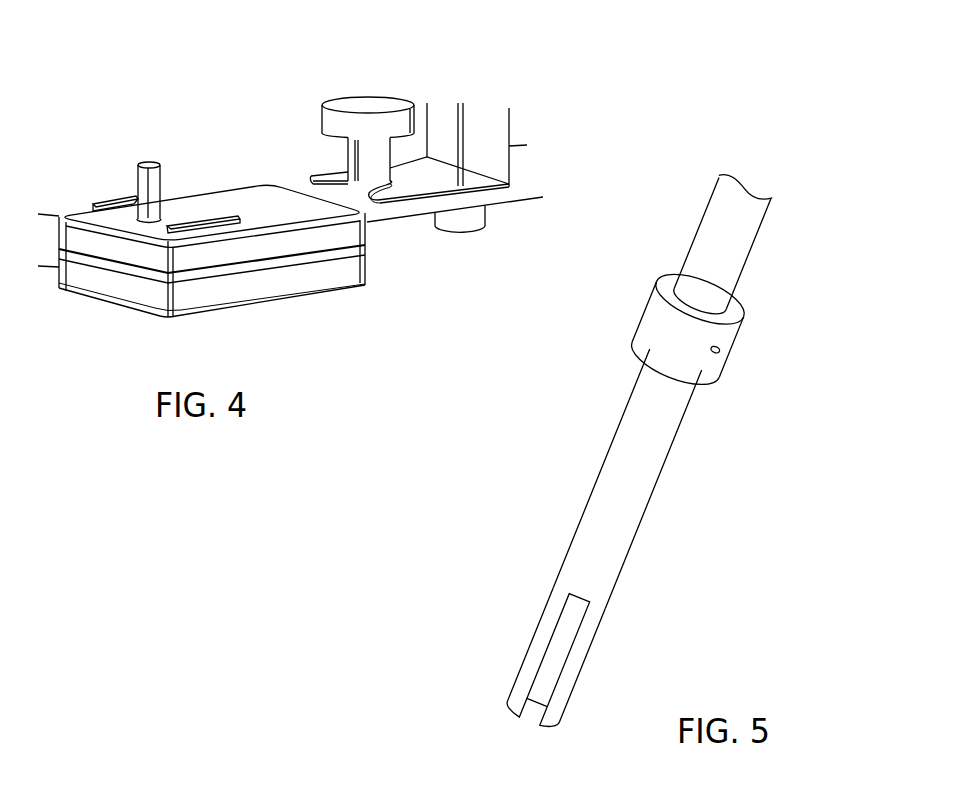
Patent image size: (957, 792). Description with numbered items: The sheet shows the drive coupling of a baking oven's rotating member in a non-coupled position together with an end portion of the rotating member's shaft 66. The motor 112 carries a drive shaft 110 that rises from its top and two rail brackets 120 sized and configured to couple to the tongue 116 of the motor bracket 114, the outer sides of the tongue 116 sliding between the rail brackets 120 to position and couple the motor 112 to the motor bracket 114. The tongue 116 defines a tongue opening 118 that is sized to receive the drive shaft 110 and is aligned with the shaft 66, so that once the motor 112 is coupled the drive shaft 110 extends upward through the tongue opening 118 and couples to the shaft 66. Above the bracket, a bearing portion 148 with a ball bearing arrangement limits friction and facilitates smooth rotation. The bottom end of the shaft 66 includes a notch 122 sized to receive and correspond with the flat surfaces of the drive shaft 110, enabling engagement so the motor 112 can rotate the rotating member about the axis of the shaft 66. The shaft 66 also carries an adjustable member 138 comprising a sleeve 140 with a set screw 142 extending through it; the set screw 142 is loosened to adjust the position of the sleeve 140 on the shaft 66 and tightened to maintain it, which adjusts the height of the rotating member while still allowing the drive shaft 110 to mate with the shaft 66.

In FIG. 4, the shaft 66 is at (407, 122).
In FIG. 5, the shaft 66 is at (645, 497).
In FIG. 4, the drive shaft 110 is at (156, 178).
In FIG. 4, the motor 112 is at (278, 284).
In FIG. 4, the motor bracket 114 is at (485, 165).
In FIG. 4, the tongue 116 is at (415, 195).
In FIG. 4, the tongue opening 118 is at (340, 177).
In FIG. 4, the rail brackets 120 is at (105, 199).
In FIG. 4, the notch 122 is at (345, 150).
In FIG. 5, the notch 122 is at (548, 697).
In FIG. 5, the adjustable member 138 is at (697, 329).
In FIG. 5, the sleeve 140 is at (652, 325).
In FIG. 5, the set screw 142 is at (720, 350).
In FIG. 4, the bearing portion 148 is at (330, 121).